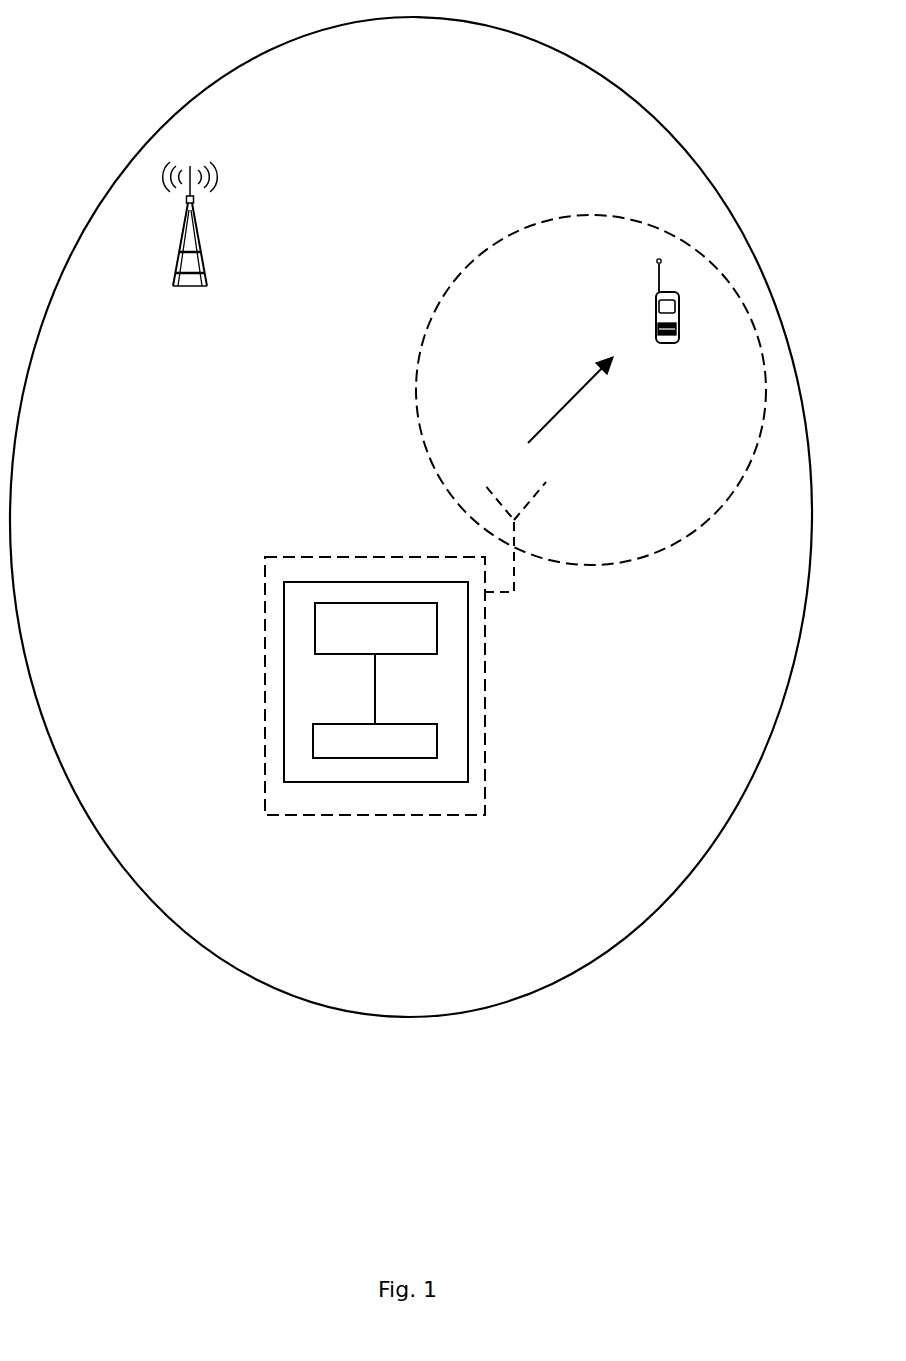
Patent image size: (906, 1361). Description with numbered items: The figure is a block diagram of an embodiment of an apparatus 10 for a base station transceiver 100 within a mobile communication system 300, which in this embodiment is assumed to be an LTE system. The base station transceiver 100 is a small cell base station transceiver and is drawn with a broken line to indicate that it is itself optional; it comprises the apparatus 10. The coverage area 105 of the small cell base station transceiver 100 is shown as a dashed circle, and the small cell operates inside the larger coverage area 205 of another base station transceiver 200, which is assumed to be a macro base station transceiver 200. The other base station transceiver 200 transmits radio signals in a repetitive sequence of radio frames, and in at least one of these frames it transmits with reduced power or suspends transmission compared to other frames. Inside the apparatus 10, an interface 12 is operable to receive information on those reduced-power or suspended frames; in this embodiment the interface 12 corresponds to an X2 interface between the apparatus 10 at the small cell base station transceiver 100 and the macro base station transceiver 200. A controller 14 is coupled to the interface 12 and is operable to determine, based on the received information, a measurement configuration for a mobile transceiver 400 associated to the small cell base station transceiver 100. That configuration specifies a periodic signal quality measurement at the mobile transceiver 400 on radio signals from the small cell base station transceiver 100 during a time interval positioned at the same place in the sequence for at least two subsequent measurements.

The apparatus 10 is at (362, 782).
The interface 12 is at (430, 654).
The controller 14 is at (400, 758).
The base station transceiver 100 is at (470, 815).
The coverage area 105 is at (665, 549).
The other base station transceiver 200 is at (206, 280).
The coverage area 205 is at (577, 973).
The mobile communication system 300 is at (125, 996).
The mobile transceiver 400 is at (680, 340).